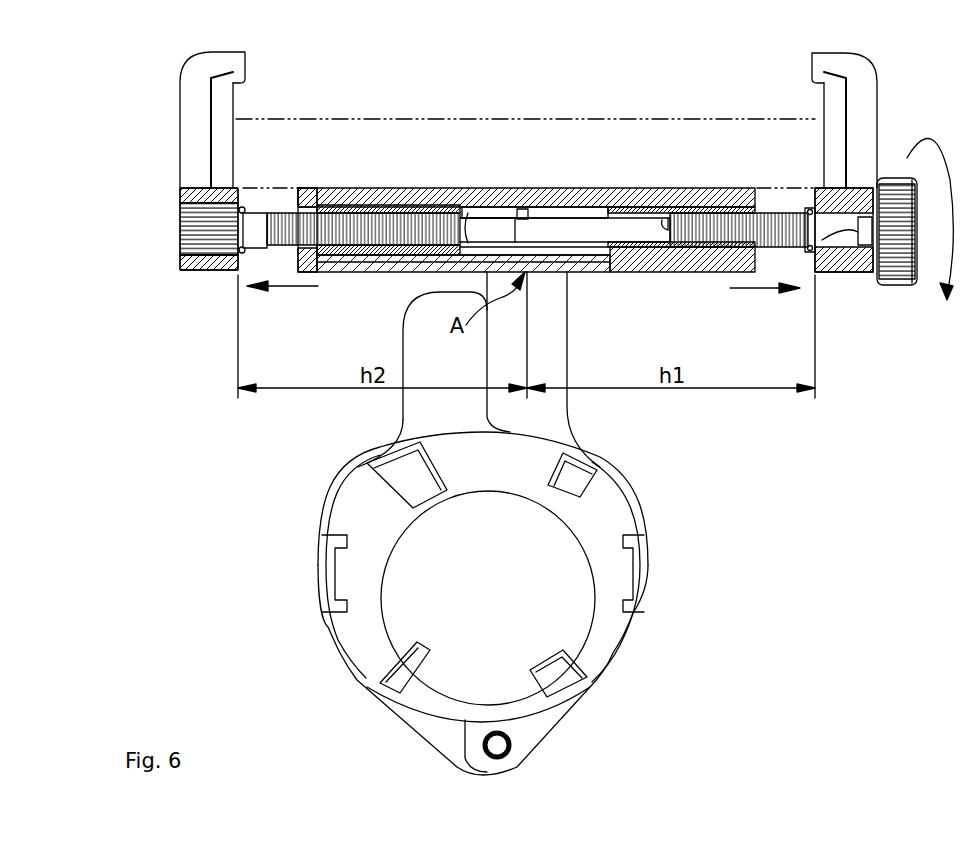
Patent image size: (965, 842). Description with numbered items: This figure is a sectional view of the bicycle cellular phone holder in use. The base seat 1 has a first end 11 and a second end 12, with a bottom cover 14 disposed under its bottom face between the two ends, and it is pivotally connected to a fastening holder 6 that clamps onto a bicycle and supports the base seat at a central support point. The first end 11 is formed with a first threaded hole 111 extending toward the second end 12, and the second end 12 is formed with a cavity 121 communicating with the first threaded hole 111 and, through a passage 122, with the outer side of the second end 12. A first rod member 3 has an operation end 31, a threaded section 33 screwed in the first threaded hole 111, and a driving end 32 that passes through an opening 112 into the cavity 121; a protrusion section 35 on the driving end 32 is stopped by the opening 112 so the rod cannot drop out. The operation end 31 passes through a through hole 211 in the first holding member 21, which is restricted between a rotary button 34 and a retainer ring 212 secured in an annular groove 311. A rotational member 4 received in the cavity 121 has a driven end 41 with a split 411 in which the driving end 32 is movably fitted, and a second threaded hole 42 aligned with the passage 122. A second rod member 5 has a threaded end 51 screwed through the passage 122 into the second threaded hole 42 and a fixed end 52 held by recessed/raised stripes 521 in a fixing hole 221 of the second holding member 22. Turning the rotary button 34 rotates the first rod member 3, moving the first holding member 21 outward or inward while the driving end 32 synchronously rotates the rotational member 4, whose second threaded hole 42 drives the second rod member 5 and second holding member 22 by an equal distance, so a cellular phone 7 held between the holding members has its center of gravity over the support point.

The base seat 1 is at (506, 213).
The first end 11 is at (728, 190).
The first threaded hole 111 is at (670, 212).
The opening 112 is at (597, 207).
The second end 12 is at (292, 229).
The cavity 121 is at (484, 210).
The passage 122 is at (322, 272).
The bottom cover 14 is at (570, 262).
The first holding member 21 is at (857, 103).
The through hole 211 is at (858, 215).
The retainer ring 212 is at (811, 205).
The second holding member 22 is at (175, 185).
The fixing hole 221 is at (200, 245).
The first rod member 3 is at (734, 246).
The operation end 31 is at (866, 245).
The annular groove 311 is at (822, 272).
The driving end 32 is at (595, 237).
The threaded section 33 is at (710, 250).
The rotary button 34 is at (893, 285).
The protrusion section 35 is at (523, 209).
The rotational member 4 is at (463, 280).
The driven end 41 is at (480, 258).
The second threaded hole 42 is at (326, 240).
The second rod member 5 is at (379, 192).
The threaded end 51 is at (290, 213).
The fixed end 52 is at (177, 220).
The recessed/raised stripes 521 is at (200, 222).
The fastening holder 6 is at (536, 523).
The split 411 is at (563, 298).
The cellular phone 7 is at (627, 115).